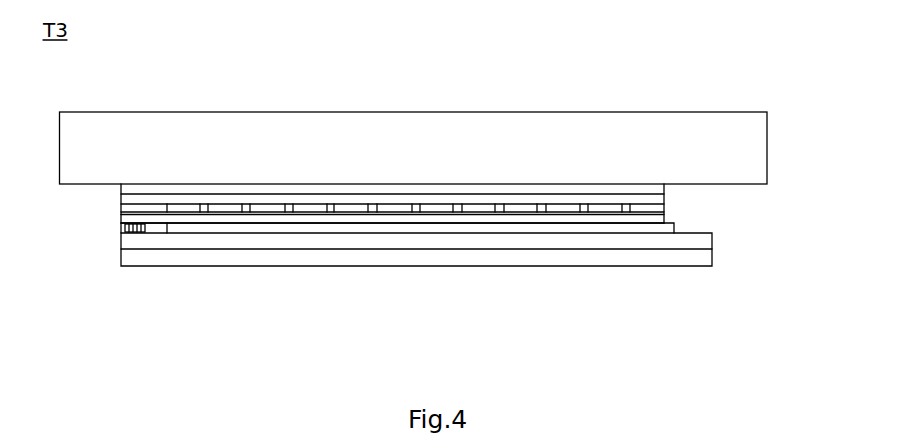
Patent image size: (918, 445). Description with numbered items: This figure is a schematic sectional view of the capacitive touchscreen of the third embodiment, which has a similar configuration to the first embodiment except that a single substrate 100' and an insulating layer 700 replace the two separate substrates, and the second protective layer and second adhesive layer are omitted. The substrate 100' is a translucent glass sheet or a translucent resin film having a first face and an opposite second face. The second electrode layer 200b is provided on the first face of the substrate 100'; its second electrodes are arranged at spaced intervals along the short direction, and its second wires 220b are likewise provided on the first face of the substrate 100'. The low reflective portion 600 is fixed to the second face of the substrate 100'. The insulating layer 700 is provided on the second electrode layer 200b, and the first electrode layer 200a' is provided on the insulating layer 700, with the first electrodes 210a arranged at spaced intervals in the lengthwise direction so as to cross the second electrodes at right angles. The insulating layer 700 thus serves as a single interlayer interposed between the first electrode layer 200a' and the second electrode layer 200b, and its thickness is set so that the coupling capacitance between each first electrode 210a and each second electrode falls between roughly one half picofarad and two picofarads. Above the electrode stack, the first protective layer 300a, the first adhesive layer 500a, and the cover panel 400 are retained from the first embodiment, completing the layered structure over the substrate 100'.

The cover panel 400 is at (747, 153).
The first adhesive layer 500a is at (646, 190).
The first protective layer 300a is at (611, 198).
The first electrodes 210a is at (226, 207).
The first electrode layer 200a' is at (473, 203).
The insulating layer 700 is at (488, 217).
The second electrode layer 200b is at (679, 227).
The second wires 220b is at (120, 228).
The substrate 100' is at (416, 274).
The low reflective portion 600 is at (375, 257).